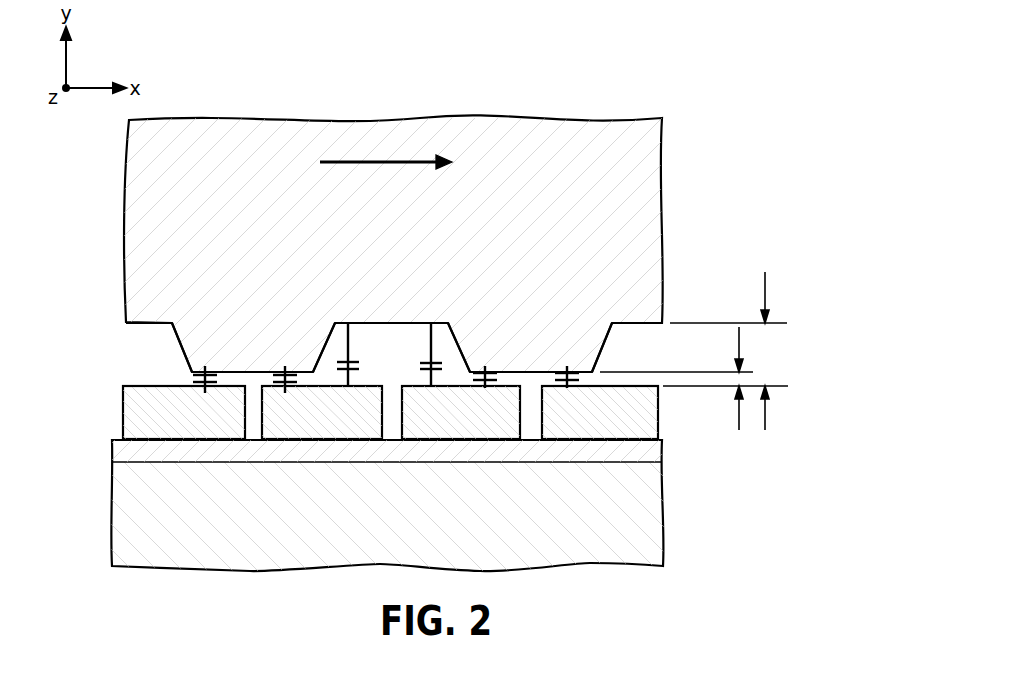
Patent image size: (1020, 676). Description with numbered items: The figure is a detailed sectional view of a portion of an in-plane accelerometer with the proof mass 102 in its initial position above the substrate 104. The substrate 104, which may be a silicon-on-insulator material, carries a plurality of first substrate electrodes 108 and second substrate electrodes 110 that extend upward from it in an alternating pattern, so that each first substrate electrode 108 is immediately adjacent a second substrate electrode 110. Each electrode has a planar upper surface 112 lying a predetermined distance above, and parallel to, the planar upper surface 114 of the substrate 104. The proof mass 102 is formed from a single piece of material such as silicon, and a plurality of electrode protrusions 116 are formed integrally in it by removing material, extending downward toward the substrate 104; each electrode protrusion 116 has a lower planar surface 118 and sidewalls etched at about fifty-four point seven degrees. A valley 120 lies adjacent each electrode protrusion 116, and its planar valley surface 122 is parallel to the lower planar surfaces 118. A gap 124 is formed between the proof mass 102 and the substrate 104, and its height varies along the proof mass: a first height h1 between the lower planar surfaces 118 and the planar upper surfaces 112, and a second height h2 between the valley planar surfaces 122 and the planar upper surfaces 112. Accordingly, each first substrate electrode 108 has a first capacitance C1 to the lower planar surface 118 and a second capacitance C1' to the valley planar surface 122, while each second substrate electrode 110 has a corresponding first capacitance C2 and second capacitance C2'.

The proof mass 102 is at (638, 163).
The substrate 104 is at (642, 505).
The first substrate electrode 108 is at (321, 412).
The second substrate electrode 110 is at (385, 412).
The planar upper surface 112 is at (137, 383).
The planar upper surface of substrate 114 is at (254, 443).
The electrode protrusion 116 is at (209, 340).
The lower planar surface 118 is at (240, 372).
The valley 120 is at (436, 311).
The planar valley surface 122 is at (384, 320).
The gap 124 is at (390, 352).
The first capacitance C1 is at (281, 347).
The first capacitance C2 is at (410, 343).
The second capacitance C1' is at (425, 325).
The second capacitance C2' is at (357, 329).
The first height h1 is at (676, 394).
The second height h2 is at (725, 339).